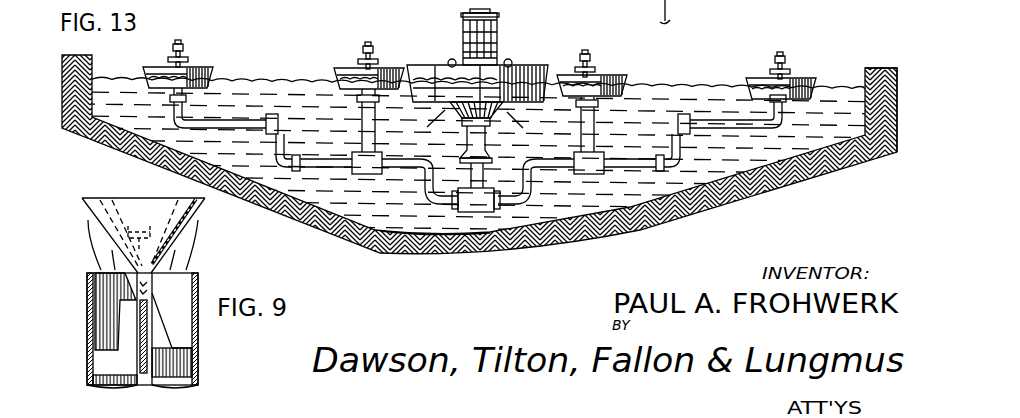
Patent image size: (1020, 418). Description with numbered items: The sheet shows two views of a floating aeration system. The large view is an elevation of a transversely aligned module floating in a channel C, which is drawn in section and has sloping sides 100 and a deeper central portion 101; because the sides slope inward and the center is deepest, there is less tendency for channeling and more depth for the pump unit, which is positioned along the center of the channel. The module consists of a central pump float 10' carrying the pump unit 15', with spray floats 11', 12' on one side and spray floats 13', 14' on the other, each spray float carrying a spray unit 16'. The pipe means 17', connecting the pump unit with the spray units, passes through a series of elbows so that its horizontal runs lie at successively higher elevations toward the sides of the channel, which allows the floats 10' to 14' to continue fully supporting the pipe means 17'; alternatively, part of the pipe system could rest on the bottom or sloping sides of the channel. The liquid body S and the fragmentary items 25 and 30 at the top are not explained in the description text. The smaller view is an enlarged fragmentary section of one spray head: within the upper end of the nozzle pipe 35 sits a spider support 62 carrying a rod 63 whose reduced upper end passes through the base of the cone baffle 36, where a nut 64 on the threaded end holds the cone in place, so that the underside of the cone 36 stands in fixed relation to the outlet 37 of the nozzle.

In FIG. 13, the pump float 10' is at (492, 82).
In FIG. 13, the upstream spray float 11' is at (378, 63).
In FIG. 13, the upstream spray float 12' is at (195, 65).
In FIG. 13, the downstream spray float 13' is at (607, 74).
In FIG. 13, the downstream spray float 14' is at (789, 77).
In FIG. 13, the pump unit 15' is at (504, 37).
In FIG. 13, the spray unit 16' is at (500, 47).
In FIG. 13, the pipe means 17' is at (478, 150).
In FIG. 13, the sloping sides 100 is at (305, 210).
In FIG. 13, the deeper central portion 101 is at (495, 230).
In FIG. 13, the liquid in basin S is at (818, 100).
In FIG. 13, the channel C is at (864, 80).
In FIG. 13, the element of adjacent figure (cut off) 25 is at (330, 2).
In FIG. 13, the element of adjacent figure (cut off) 30 is at (665, 1).
In FIG. 9, the nozzle pipe 35 is at (199, 360).
In FIG. 9, the cone baffle 36 is at (132, 201).
In FIG. 9, the outlet 37 is at (188, 268).
In FIG. 9, the spider support 62 is at (93, 343).
In FIG. 9, the rod 63 is at (138, 292).
In FIG. 9, the nut 64 is at (154, 212).